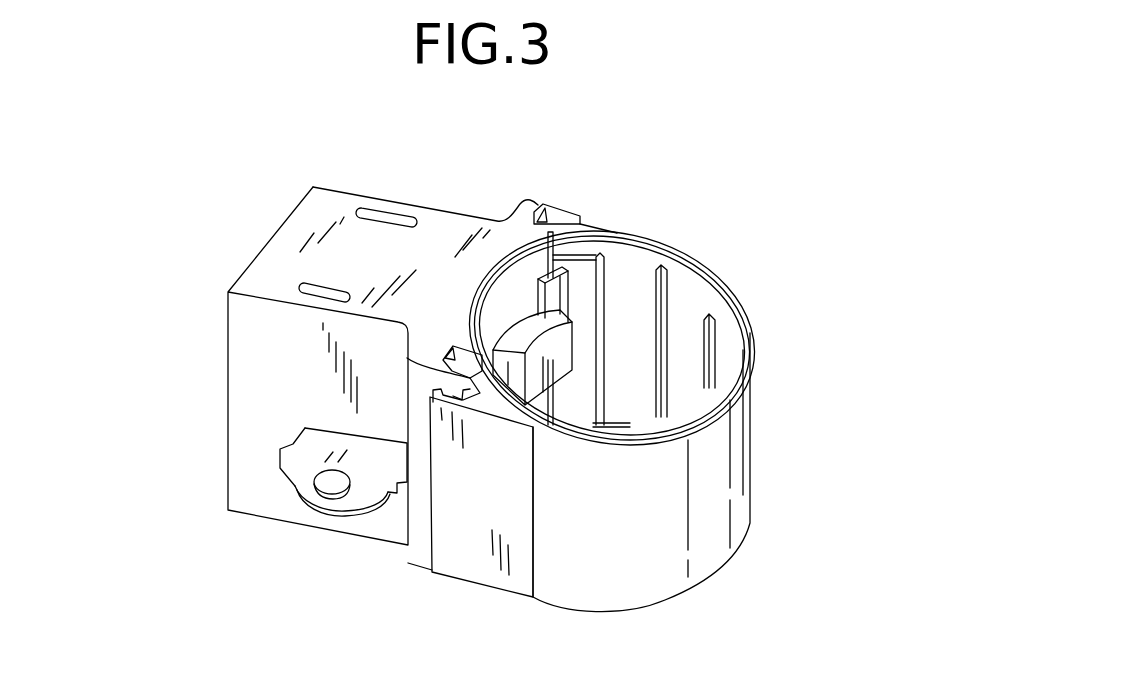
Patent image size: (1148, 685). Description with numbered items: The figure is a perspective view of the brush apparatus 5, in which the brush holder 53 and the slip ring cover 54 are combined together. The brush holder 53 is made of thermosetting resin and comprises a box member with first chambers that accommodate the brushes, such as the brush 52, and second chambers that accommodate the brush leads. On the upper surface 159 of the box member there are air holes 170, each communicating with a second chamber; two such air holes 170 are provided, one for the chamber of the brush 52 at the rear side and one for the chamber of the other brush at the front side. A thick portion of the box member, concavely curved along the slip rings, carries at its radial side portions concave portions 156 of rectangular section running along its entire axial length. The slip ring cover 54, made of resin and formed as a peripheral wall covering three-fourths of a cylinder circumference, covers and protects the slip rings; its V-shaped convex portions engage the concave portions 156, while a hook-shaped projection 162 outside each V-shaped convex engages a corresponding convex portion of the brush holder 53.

The brush apparatus 5 is at (718, 221).
The brush holder 53 is at (286, 266).
The upper surface 159 is at (335, 202).
The air hole 170 is at (393, 217).
The slip ring cover 54 is at (744, 418).
The brush 52 is at (552, 357).
The concave portion 156 is at (330, 504).
The hook-shaped projection 162 is at (467, 568).